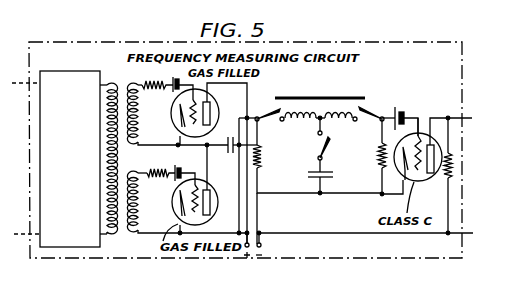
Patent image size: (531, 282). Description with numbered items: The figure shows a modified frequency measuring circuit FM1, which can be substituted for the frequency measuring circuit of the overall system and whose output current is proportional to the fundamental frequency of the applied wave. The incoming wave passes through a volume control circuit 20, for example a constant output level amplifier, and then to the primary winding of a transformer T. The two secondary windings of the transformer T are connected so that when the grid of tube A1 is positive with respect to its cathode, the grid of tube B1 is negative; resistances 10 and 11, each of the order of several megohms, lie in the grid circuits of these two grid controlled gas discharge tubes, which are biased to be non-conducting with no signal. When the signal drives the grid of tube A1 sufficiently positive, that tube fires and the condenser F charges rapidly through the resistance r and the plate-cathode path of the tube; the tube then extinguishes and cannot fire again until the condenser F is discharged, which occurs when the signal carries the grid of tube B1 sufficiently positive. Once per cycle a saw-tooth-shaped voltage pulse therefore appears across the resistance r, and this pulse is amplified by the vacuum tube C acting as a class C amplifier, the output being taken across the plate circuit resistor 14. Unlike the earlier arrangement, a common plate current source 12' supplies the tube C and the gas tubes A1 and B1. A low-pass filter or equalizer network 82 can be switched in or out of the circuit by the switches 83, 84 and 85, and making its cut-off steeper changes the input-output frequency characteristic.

The frequency measuring circuit FM1 is at (66, 46).
The volume control circuit 20 is at (57, 80).
The transformer T is at (122, 158).
The resistance 10 is at (167, 94).
The resistance 11 is at (171, 180).
The grid controlled gas discharge tube A1 is at (212, 111).
The grid controlled gas discharge tube B1 is at (181, 206).
The condenser F is at (232, 153).
The switch 83 is at (263, 112).
The low-pass filter or equalizer network 82 is at (317, 124).
The switch 85 is at (328, 150).
The switch 84 is at (367, 108).
The resistance r is at (262, 158).
The plate circuit resistor 14 is at (422, 176).
The vacuum tube C is at (421, 118).
The common plate current source 12' is at (273, 245).